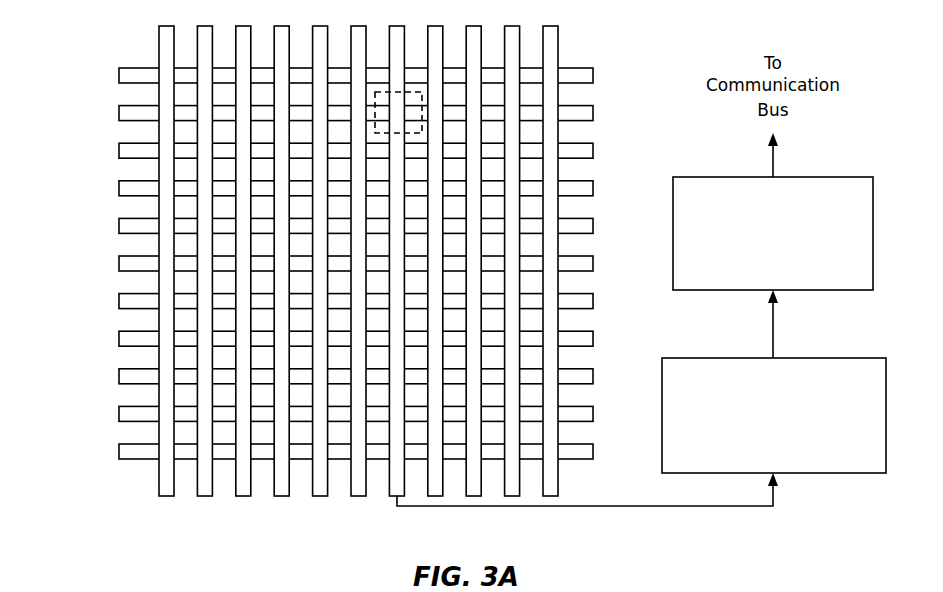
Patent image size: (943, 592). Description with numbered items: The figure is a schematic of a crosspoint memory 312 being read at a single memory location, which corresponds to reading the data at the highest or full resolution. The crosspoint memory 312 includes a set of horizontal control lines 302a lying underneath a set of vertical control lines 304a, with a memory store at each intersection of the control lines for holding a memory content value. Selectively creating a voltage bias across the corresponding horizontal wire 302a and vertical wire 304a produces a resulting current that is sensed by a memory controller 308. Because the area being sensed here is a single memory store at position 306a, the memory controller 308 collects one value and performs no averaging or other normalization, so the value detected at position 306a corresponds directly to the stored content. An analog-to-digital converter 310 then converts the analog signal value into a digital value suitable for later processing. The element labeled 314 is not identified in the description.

The horizontal control lines 302a is at (308, 251).
The vertical control lines 304a is at (305, 292).
The memory element position 306a is at (422, 120).
The memory controller 308 is at (764, 399).
The analog-to-digital converter 310 is at (757, 217).
The crosspoint memory 312 is at (328, 287).
The column line 314 is at (133, 487).